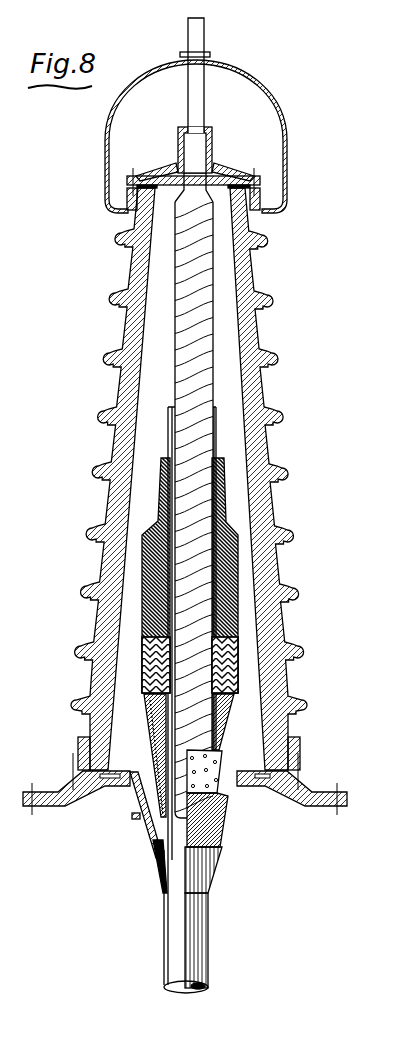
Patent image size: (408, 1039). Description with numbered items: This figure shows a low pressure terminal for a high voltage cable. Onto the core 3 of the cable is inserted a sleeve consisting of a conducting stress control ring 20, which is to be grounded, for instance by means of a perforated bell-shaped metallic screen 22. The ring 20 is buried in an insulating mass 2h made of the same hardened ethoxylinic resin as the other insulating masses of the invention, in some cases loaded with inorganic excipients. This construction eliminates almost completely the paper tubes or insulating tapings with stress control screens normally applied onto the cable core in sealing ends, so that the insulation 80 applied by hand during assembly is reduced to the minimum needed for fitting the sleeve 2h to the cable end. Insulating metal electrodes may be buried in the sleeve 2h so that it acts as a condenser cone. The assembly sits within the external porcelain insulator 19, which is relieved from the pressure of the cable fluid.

The external porcelain insulator 19 is at (100, 565).
The core of the cable 3 is at (180, 613).
The insulating mass 2h is at (233, 595).
The conducting stress control ring 20 is at (233, 653).
The insulation applied by hand 80 is at (163, 745).
The perforated bell-shaped metallic screen 22 is at (212, 775).